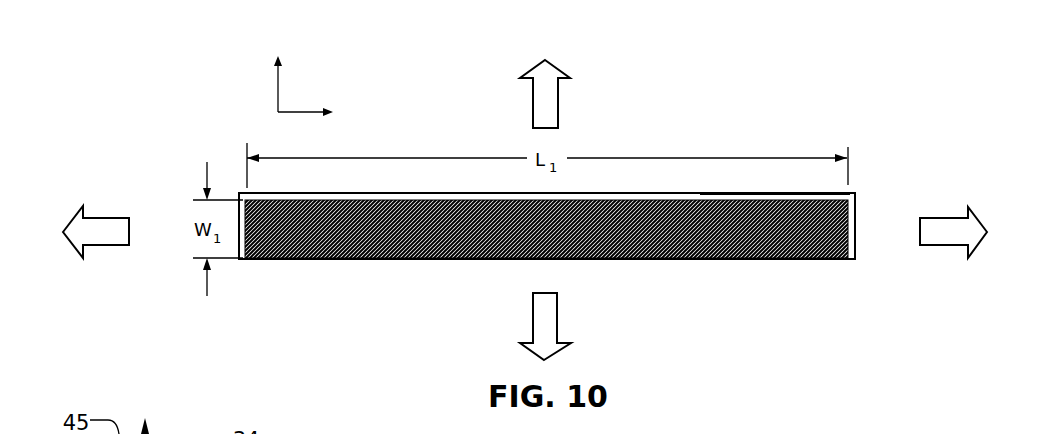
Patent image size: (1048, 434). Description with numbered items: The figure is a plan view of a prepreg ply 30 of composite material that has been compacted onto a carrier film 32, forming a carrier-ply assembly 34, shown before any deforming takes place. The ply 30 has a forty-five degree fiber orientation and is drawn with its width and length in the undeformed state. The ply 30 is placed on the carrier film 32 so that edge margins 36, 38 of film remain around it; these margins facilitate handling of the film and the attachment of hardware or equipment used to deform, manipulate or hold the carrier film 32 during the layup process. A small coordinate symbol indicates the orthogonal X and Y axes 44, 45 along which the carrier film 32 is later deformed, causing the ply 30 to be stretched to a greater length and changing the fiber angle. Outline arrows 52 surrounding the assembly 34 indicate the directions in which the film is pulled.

The ply 30 is at (367, 253).
The carrier film 32 is at (420, 193).
The carrier-ply assembly 34 is at (701, 130).
The edge margin 36 is at (775, 198).
The edge margin 38 is at (855, 228).
The X axis 44 is at (298, 113).
The Y axis 45 is at (278, 92).
The applied force arrows 52 is at (547, 105).